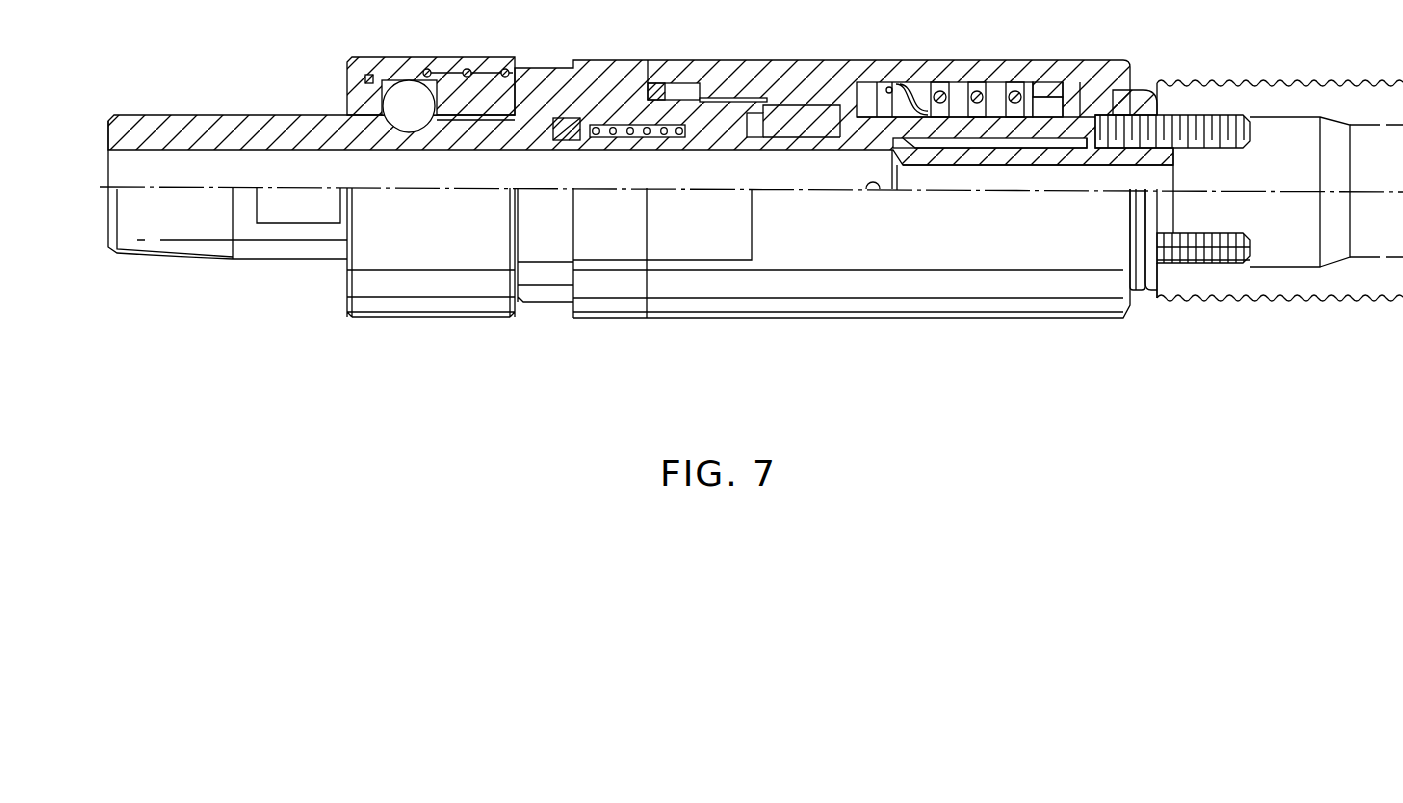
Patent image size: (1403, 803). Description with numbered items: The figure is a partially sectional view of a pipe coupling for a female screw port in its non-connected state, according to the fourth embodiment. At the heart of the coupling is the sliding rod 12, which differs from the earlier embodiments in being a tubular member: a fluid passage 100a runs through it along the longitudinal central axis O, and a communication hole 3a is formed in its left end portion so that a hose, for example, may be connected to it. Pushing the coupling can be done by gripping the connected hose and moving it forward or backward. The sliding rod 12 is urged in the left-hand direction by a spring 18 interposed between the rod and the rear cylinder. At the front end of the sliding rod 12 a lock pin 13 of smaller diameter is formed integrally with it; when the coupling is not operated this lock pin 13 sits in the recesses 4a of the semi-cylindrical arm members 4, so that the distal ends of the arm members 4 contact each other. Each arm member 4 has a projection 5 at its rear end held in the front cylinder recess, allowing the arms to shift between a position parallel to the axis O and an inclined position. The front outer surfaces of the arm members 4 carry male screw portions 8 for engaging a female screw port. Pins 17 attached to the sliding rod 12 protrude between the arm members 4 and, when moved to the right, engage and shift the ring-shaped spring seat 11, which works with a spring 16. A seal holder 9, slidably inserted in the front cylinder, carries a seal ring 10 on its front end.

The communication hole 3a is at (147, 163).
The fluid passage 100a is at (537, 160).
The spring 18 is at (630, 126).
The projection 5 is at (790, 110).
The arm member 4 is at (888, 96).
The ring-shaped spring seat 11 is at (921, 92).
The spring 16 is at (975, 92).
The seal holder 9 is at (1090, 88).
The seal ring 10 is at (1145, 97).
The sliding rod 12 is at (718, 152).
The longitudinal central axis O is at (787, 191).
The pin 17 is at (875, 191).
The recess 4a is at (972, 142).
The lock pin 13 is at (1038, 155).
The male screw portion 8 is at (1208, 268).